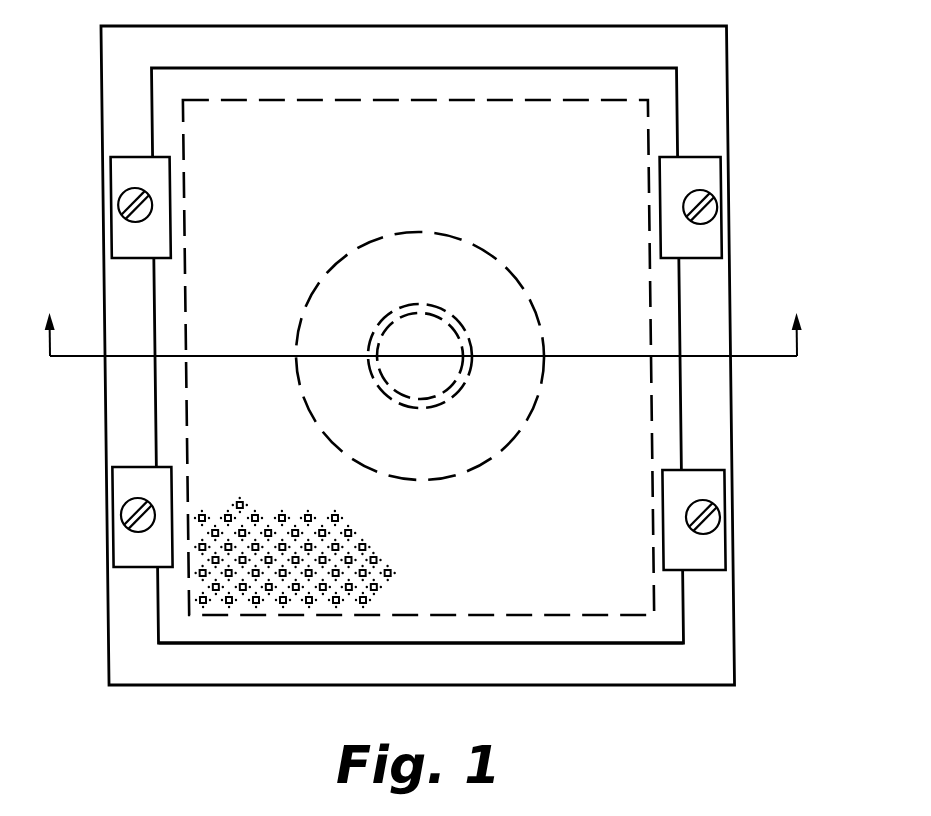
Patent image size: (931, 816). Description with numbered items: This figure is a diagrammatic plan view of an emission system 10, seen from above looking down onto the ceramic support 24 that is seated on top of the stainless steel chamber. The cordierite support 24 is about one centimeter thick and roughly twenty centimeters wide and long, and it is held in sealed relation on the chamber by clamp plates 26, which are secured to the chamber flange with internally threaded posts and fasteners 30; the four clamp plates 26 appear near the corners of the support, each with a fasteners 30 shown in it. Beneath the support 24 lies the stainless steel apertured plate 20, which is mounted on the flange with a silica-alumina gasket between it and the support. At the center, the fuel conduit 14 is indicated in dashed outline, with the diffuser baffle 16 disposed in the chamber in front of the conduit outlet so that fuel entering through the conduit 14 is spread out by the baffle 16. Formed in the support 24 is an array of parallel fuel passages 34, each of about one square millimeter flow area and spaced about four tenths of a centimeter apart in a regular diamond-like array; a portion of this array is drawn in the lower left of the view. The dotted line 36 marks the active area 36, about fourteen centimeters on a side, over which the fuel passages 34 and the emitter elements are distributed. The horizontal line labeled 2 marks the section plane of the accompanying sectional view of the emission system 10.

The emission system 10 is at (748, 112).
The fuel conduit 14 is at (391, 398).
The diffuser baffle 16 is at (340, 253).
The apertured plate 20 is at (719, 628).
The ceramic support 24 is at (222, 652).
The clamp plates 26 is at (104, 242).
The fasteners 30 is at (121, 204).
The fuel passages 34 is at (306, 516).
The active area 36 is at (348, 366).
The section line 2- 2 is at (423, 351).